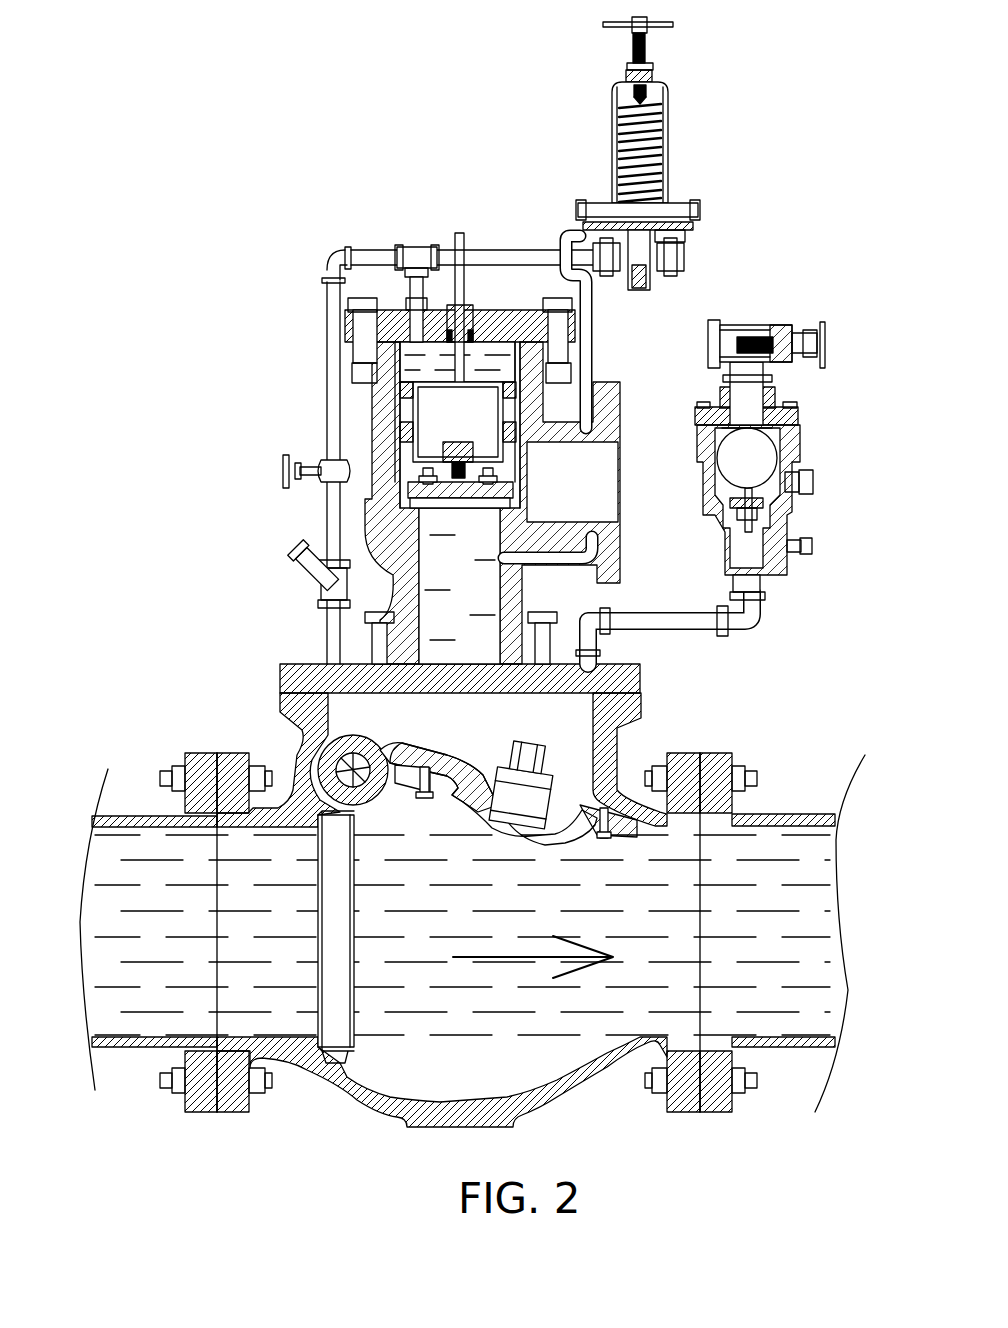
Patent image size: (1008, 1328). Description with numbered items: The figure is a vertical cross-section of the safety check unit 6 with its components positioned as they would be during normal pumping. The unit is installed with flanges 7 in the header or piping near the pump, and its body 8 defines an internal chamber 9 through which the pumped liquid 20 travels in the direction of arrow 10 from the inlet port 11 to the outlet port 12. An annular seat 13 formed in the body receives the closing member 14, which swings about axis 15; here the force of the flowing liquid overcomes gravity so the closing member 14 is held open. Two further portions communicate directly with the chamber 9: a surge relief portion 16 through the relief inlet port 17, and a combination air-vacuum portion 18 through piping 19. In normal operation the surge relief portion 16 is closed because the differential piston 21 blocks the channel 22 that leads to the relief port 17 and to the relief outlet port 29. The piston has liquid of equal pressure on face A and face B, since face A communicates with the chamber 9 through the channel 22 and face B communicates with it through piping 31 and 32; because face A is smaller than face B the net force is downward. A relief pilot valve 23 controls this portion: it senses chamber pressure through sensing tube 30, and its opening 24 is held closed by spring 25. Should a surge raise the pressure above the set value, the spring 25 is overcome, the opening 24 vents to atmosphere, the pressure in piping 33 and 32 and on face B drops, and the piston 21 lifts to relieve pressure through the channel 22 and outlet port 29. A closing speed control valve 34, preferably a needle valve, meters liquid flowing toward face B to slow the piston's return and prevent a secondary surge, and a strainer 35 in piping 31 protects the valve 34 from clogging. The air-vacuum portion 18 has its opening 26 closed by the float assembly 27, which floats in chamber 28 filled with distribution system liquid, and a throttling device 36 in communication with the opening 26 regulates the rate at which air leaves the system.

The safety check unit 6 is at (240, 177).
The flanges 7 is at (225, 1114).
The body 8 is at (657, 739).
The internal chamber 9 is at (466, 919).
The arrow 10 is at (500, 962).
The inlet port 11 is at (256, 923).
The outlet port 12 is at (656, 899).
The annular seat 13 is at (330, 1051).
The closing member 14 is at (524, 846).
The axis 15 is at (308, 757).
The surge relief portion 16 is at (675, 322).
The relief inlet port 17 is at (478, 739).
The air-vacuum portion 18 is at (835, 521).
The piping 19 is at (695, 607).
The liquid 20 is at (760, 949).
The differential piston 21 is at (430, 405).
The channel 22 is at (438, 616).
The relief pilot valve 23 is at (715, 144).
The opening 24 is at (683, 247).
The spring 25 is at (612, 150).
The opening 26 is at (750, 423).
The float assembly 27 is at (762, 447).
The chamber 28 is at (773, 495).
The outlet port 29 is at (551, 494).
The sensing tube 30 is at (597, 304).
The piping 31 is at (329, 332).
The piping 32 is at (400, 283).
The piping 33 is at (493, 248).
The closing speed control valve 34 is at (300, 470).
The strainer 35 is at (302, 557).
The throttling device 36 is at (766, 323).
The face A is at (455, 508).
The face B is at (448, 395).